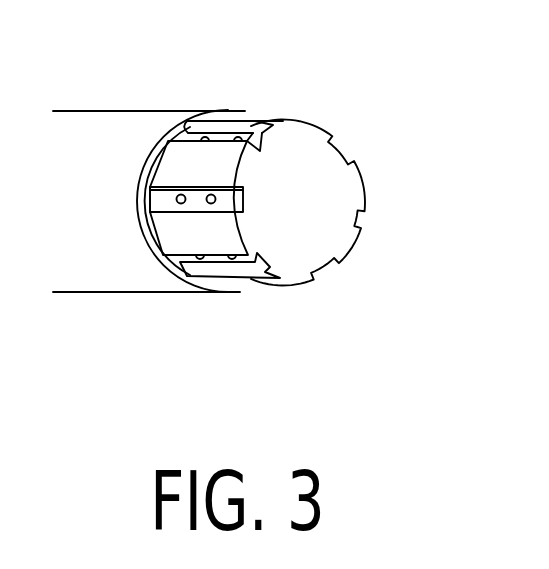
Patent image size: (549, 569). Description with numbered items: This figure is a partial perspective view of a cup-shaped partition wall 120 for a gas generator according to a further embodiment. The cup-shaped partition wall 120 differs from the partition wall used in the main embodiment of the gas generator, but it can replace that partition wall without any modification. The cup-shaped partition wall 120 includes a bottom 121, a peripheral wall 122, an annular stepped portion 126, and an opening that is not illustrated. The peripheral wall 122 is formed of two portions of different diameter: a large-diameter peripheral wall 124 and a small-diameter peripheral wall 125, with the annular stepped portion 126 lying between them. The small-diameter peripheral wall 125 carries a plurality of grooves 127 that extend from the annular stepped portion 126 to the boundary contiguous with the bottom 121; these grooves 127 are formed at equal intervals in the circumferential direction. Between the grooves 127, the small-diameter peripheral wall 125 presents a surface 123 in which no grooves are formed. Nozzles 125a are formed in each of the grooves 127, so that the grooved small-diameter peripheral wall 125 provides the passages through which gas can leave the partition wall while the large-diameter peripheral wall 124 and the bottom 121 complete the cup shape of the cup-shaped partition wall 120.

The cup-shaped partition wall 120 is at (277, 92).
The bottom 121 is at (323, 202).
The peripheral wall 122 is at (260, 362).
The surface 123 is at (173, 167).
The large-diameter peripheral wall 124 is at (122, 276).
The small-diameter peripheral wall 125 is at (253, 279).
The nozzles 125a is at (176, 199).
The annular stepped portion 126 is at (153, 145).
The grooves 127 is at (259, 140).